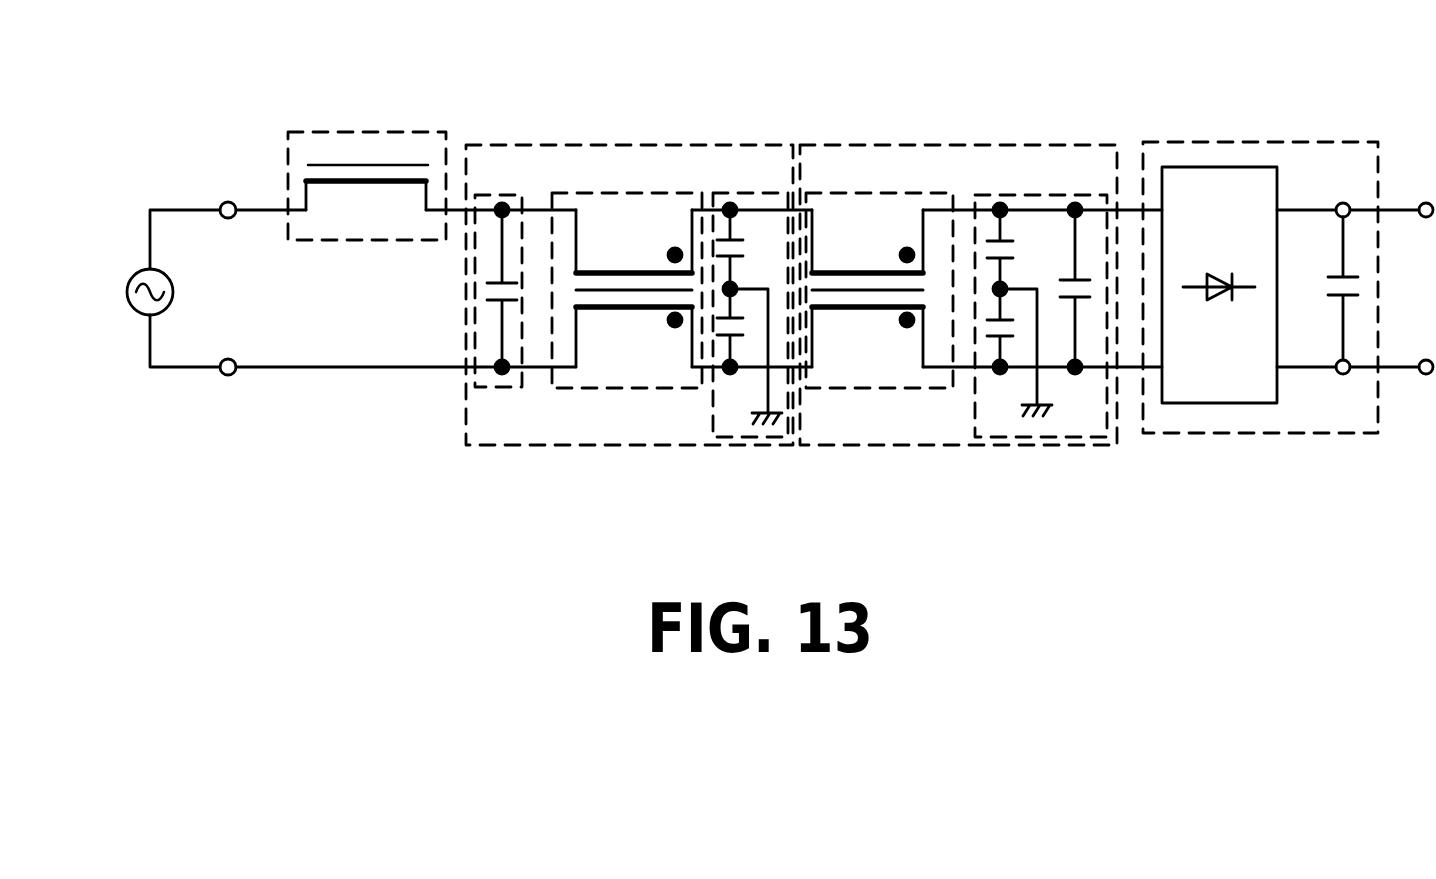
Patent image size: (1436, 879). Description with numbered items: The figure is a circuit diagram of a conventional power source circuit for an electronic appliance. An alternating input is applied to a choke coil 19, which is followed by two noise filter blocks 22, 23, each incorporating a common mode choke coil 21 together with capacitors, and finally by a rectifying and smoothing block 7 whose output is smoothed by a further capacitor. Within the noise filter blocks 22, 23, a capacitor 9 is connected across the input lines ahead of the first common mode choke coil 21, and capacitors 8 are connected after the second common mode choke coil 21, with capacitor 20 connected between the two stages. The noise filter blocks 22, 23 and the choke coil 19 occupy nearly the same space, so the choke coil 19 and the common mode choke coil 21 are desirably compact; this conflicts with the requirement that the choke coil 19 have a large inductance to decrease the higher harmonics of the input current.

The choke coil 19 is at (290, 167).
The capacitor 9 is at (512, 193).
The capacitor 20 is at (753, 195).
The common mode choke coil 21 is at (635, 388).
The noise filter block 22 is at (850, 445).
The noise filter block 23 is at (528, 447).
The capacitor 8 is at (1052, 183).
The rectifying and smoothing block 7 is at (1285, 435).